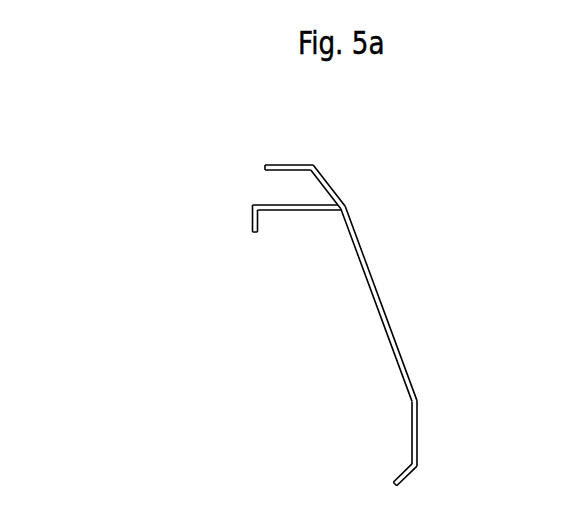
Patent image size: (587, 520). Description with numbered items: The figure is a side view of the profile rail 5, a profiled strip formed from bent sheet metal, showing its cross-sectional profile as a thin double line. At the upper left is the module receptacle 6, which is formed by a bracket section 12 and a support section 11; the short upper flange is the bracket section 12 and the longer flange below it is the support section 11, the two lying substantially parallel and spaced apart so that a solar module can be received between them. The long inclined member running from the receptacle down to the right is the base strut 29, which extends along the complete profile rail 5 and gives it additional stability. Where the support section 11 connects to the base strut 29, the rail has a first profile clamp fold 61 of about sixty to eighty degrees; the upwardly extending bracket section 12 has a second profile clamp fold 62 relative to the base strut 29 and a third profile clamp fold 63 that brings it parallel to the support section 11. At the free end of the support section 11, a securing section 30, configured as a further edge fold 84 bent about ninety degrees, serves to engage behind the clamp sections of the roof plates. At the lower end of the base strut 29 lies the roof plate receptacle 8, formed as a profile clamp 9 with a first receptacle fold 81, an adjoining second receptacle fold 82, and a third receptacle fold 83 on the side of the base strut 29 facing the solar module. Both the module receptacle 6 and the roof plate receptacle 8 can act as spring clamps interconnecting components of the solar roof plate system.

The profile rail 5 is at (440, 196).
The module receptacle 6 is at (264, 183).
The roof plate receptacle 8 is at (286, 359).
The profile clamp 9 is at (286, 359).
The support section 11 is at (303, 205).
The bracket section 12 is at (285, 164).
The base strut 29 is at (383, 320).
The securing section 30 is at (253, 221).
The first profile clamp fold 61 is at (345, 205).
The second profile clamp fold 62 is at (343, 203).
The third profile clamp fold 63 is at (312, 165).
The first receptacle fold 81 is at (417, 399).
The second receptacle fold 82 is at (416, 465).
The third receptacle fold 83 is at (345, 205).
The edge fold 84 is at (256, 205).